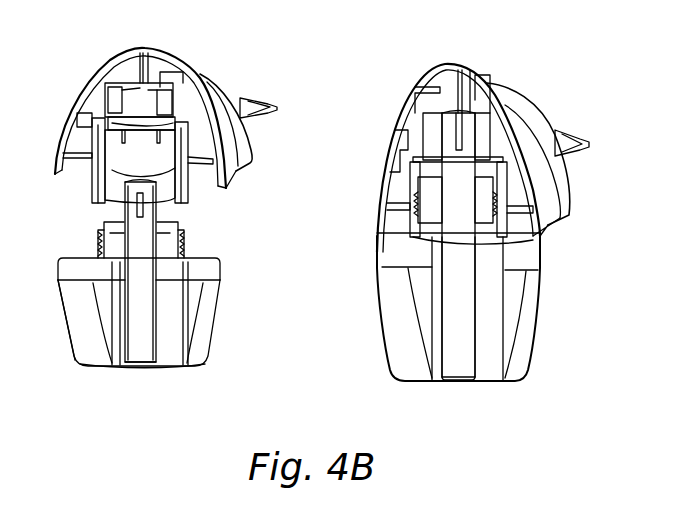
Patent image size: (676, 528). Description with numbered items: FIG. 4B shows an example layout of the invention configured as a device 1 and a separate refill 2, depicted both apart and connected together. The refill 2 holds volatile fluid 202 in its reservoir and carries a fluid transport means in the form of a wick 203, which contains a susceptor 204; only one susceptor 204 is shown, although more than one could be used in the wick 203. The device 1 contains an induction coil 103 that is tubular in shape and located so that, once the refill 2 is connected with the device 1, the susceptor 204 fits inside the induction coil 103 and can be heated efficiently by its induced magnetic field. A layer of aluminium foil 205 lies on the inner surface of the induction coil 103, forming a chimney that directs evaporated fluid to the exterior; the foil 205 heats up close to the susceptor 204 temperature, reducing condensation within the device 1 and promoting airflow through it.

The device 1 is at (235, 183).
The refill 2 is at (88, 366).
The induction coil 103 is at (178, 103).
The volatile fluid 202 is at (172, 355).
The wick 203 is at (141, 355).
The susceptor 204 is at (143, 205).
The aluminium foil 205 is at (140, 100).